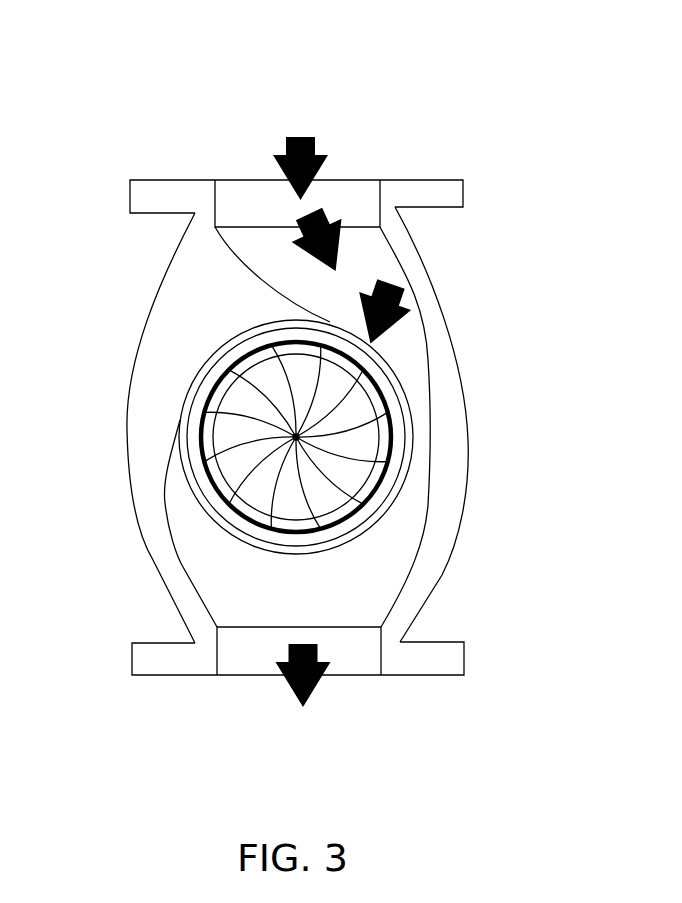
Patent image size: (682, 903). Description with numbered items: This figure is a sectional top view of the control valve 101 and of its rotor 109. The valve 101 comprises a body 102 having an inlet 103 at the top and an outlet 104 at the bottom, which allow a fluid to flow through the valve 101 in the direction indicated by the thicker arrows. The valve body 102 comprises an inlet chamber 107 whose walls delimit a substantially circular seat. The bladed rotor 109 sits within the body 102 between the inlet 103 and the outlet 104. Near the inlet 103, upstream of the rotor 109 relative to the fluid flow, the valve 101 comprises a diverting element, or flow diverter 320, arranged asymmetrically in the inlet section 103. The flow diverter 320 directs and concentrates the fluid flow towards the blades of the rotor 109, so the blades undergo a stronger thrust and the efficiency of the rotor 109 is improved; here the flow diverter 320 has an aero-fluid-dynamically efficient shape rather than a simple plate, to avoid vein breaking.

The control valve 101 is at (450, 148).
The valve body 102 is at (183, 338).
The inlet 103 is at (258, 195).
The outlet 104 is at (350, 653).
The inlet chamber 107 is at (377, 263).
The rotor 109 is at (390, 437).
The flow diverter 320 is at (330, 300).